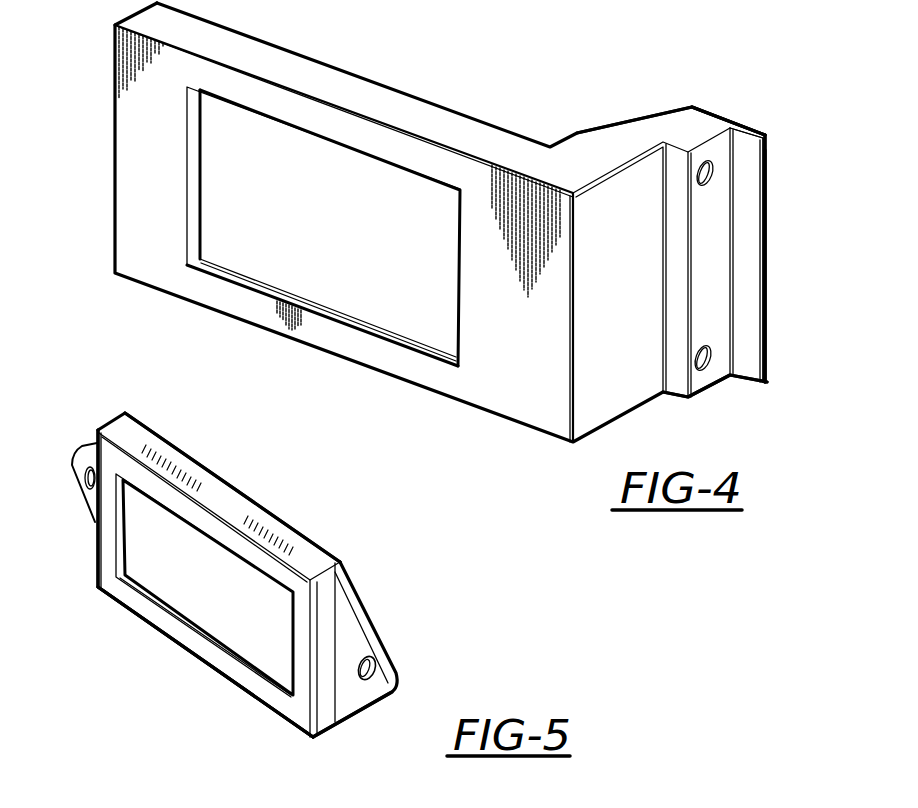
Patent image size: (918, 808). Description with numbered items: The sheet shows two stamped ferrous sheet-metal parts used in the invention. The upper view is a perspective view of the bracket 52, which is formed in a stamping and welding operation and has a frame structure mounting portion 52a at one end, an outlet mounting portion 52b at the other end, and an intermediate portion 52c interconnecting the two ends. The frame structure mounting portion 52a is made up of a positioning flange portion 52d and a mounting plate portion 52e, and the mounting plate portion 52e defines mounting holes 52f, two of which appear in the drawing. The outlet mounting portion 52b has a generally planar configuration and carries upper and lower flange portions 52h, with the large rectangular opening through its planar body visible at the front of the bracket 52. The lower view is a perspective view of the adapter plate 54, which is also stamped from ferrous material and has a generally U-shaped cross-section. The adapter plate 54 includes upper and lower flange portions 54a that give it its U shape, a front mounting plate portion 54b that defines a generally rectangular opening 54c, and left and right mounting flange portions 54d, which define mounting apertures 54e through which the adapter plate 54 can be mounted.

In FIG. 4, the bracket 52 is at (518, 116).
In FIG. 4, the frame structure mounting portion 52a is at (788, 205).
In FIG. 4, the outlet mounting portion 52b is at (397, 77).
In FIG. 4, the intermediate portion 52c is at (652, 128).
In FIG. 4, the positioning flange portion 52d is at (765, 218).
In FIG. 4, the mounting plate portion 52e is at (707, 380).
In FIG. 4, the mounting holes 52f is at (717, 358).
In FIG. 4, the upper and lower flange portions 52h is at (773, 0).
In FIG. 5, the adapter plate 54 is at (148, 637).
In FIG. 5, the upper and lower flange portions 54a is at (252, 513).
In FIG. 5, the front mounting plate portion 54b is at (193, 650).
In FIG. 5, the opening 54c is at (253, 564).
In FIG. 5, the left and right mounting flange portions 54d is at (388, 642).
In FIG. 5, the mounting apertures 54e is at (372, 675).